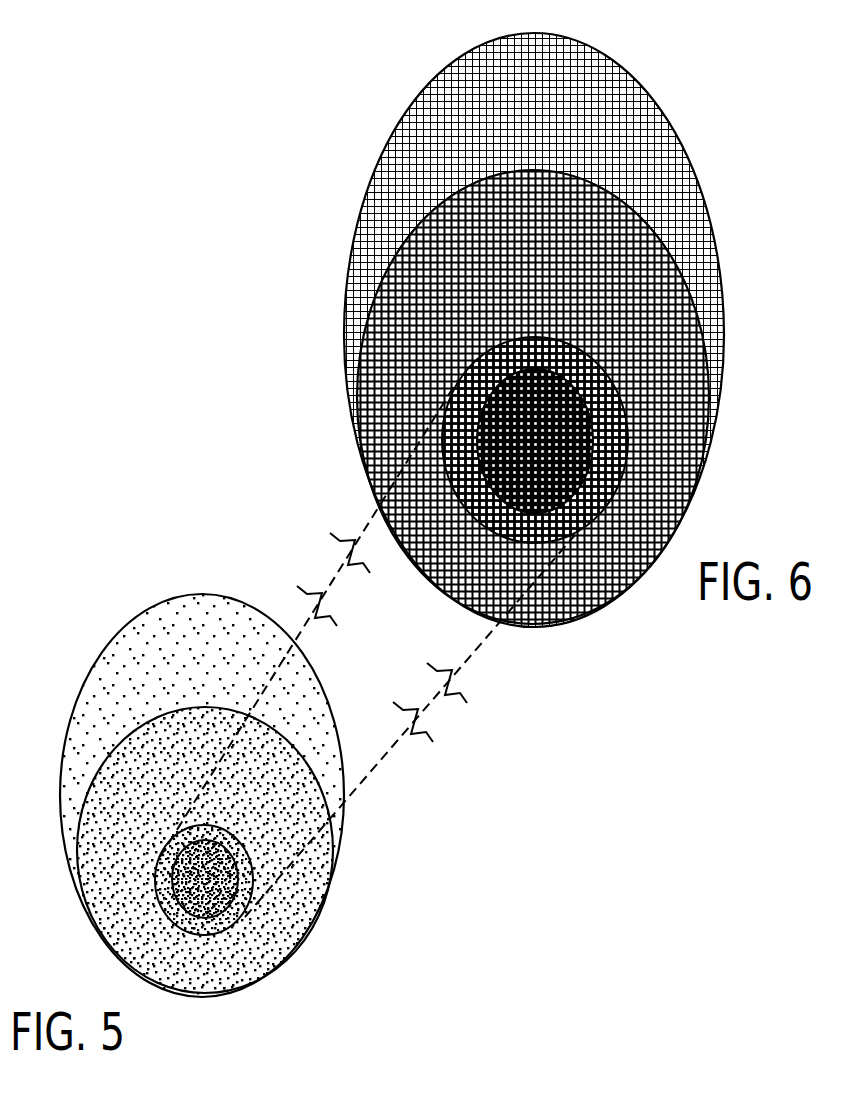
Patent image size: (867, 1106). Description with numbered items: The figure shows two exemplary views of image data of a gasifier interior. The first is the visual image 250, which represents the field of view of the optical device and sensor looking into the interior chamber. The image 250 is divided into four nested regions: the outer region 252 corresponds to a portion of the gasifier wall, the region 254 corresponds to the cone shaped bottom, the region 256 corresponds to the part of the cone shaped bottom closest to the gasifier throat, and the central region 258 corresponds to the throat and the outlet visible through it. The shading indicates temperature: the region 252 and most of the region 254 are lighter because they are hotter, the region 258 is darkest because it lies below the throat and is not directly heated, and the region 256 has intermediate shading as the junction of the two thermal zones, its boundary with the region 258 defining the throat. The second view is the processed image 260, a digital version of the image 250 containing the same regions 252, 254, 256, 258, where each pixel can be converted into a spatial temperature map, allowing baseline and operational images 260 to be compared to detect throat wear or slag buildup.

In FIG. 5, the image 250 is at (334, 1023).
In FIG. 6, the region 252 is at (390, 190).
In FIG. 5, the region 252 is at (115, 660).
In FIG. 6, the region 254 is at (380, 407).
In FIG. 5, the region 254 is at (277, 957).
In FIG. 6, the region 256 is at (625, 480).
In FIG. 5, the region 256 is at (157, 888).
In FIG. 6, the region 258 is at (580, 386).
In FIG. 5, the region 258 is at (212, 912).
In FIG. 6, the processed image 260 is at (654, 632).